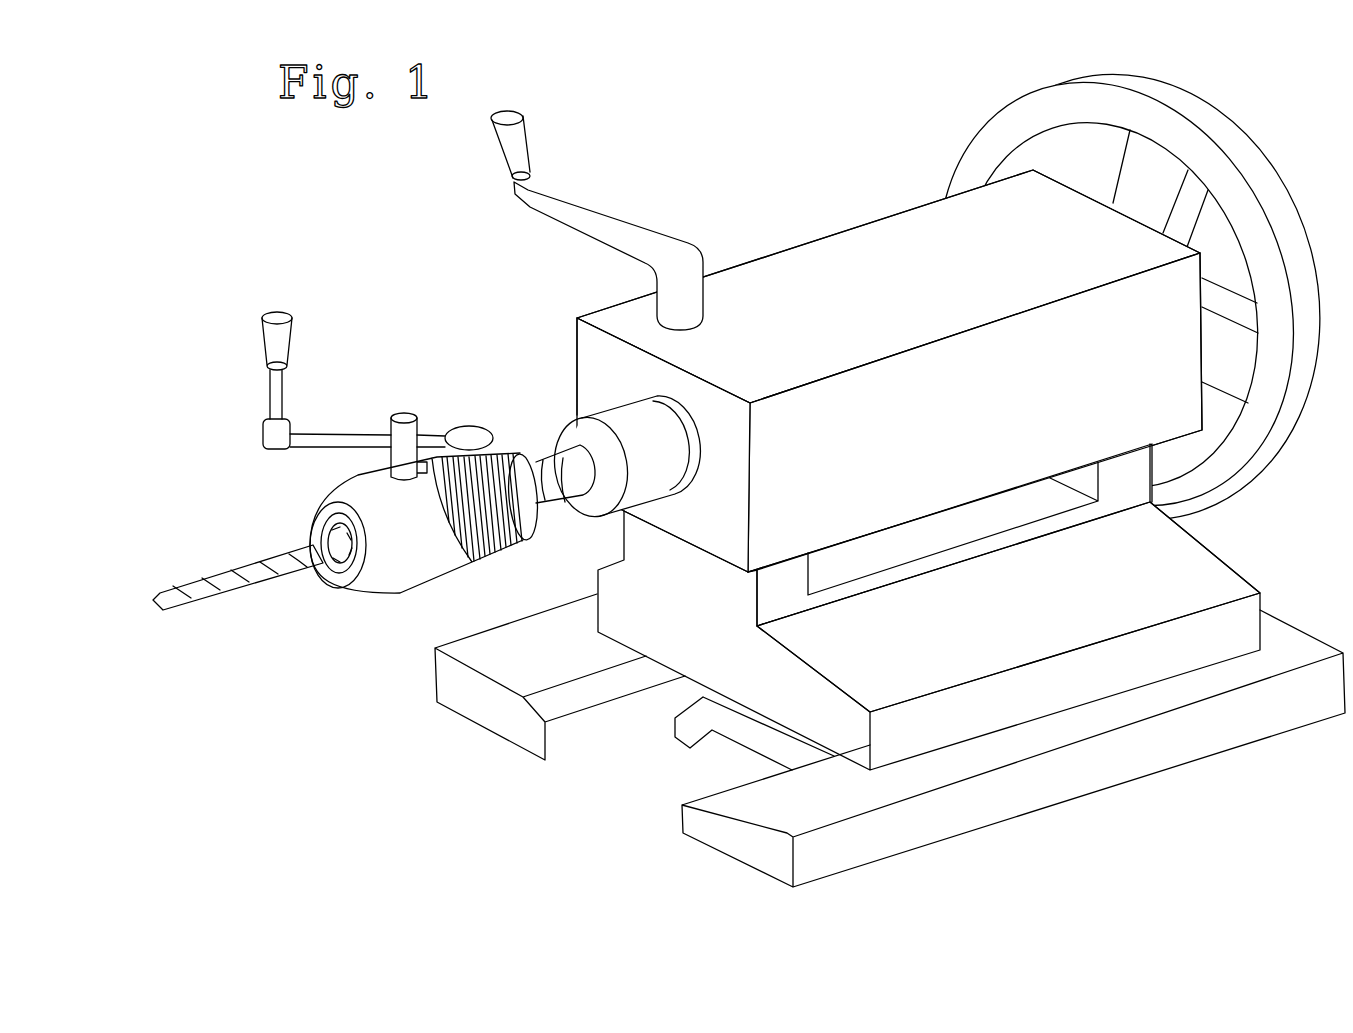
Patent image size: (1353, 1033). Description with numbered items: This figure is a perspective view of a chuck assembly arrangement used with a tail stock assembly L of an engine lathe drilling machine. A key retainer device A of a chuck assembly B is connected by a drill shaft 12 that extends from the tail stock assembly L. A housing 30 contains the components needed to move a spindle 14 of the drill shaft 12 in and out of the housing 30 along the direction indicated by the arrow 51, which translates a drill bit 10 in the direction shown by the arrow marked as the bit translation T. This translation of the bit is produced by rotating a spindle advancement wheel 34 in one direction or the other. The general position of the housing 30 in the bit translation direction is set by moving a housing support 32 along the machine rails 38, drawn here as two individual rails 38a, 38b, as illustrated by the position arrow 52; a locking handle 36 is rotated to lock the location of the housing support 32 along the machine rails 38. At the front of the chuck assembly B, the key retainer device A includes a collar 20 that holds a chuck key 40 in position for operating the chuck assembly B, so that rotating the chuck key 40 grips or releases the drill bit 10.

The drill bit 10 is at (185, 607).
The drill shaft 12 is at (572, 525).
The spindle 14 is at (615, 405).
The collar 20 is at (382, 592).
The housing 30 is at (897, 210).
The housing support 32 is at (1227, 560).
The spindle advancement wheel 34 is at (1287, 188).
The locking handle 36 is at (607, 213).
The machine rails 38 is at (842, 740).
The guide rail 38a is at (440, 720).
The guide rail 38b is at (1160, 773).
The chuck key 40 is at (369, 431).
The arrow S1 51 is at (683, 433).
The position arrow S2 52 is at (1130, 660).
The key retainer device A is at (323, 495).
The chuck assembly B is at (497, 427).
The tail stock assembly L is at (843, 203).
The bit translation T is at (203, 620).